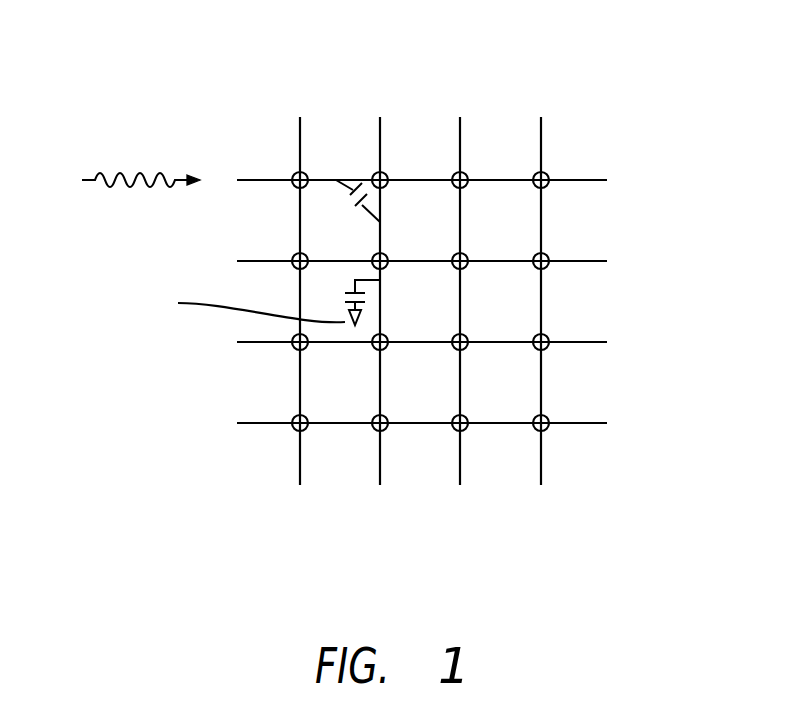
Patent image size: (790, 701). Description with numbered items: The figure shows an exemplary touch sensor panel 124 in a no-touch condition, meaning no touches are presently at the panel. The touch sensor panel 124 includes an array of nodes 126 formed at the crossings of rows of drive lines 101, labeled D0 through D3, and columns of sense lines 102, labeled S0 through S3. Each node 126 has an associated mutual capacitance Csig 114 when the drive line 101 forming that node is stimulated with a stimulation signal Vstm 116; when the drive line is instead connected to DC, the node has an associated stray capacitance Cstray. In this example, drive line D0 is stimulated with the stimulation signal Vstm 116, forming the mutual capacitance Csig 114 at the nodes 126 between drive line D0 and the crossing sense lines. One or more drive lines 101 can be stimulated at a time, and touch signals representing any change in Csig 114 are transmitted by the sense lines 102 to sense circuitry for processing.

The drive line 101 is at (250, 178).
The sense line 102 is at (380, 470).
The mutual capacitance Csig 114 is at (352, 207).
The stimulation signal Vstm 116 is at (116, 193).
The touch sensor panel 124 is at (608, 128).
The node 126 is at (385, 175).